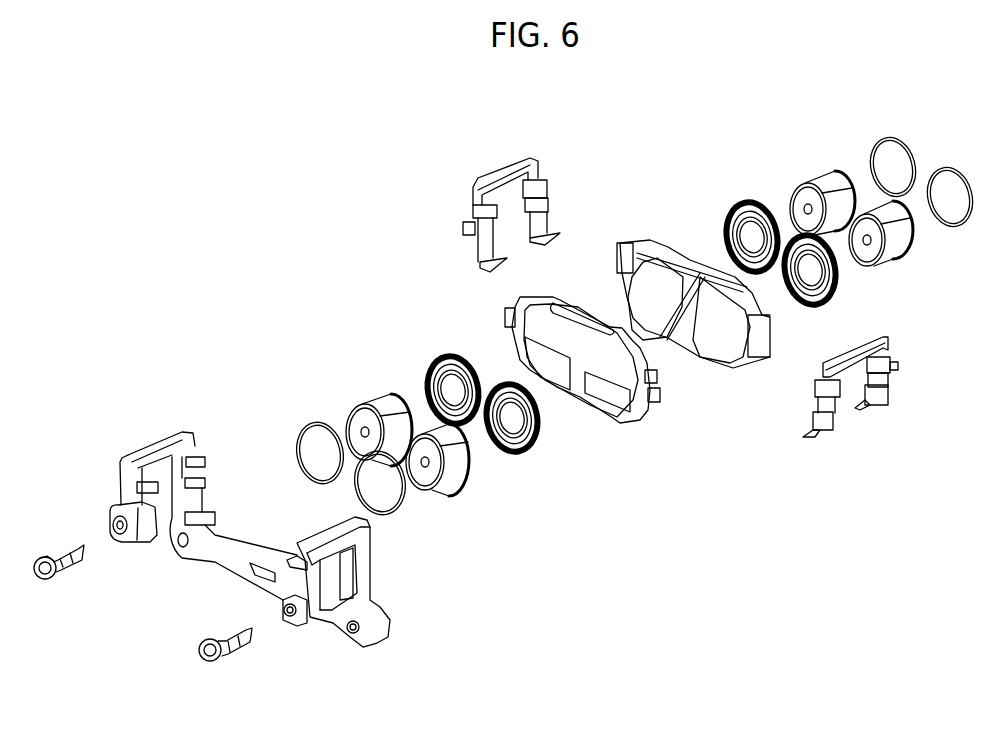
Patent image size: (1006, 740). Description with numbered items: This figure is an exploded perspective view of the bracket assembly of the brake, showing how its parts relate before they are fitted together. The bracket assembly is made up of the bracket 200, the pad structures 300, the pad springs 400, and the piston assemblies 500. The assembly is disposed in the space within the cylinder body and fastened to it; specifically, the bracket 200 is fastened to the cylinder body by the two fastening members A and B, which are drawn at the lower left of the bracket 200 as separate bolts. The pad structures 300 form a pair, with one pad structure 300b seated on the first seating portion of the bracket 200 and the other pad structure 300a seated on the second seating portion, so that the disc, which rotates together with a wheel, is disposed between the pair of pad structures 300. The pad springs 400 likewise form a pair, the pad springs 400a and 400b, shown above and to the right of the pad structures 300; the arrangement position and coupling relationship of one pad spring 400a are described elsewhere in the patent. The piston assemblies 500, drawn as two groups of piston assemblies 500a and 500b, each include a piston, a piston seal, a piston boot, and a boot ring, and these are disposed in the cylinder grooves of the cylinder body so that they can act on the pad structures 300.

The bracket 200 is at (393, 595).
The fastening member A is at (50, 553).
The fastening member B is at (232, 653).
The pad structures 300 is at (711, 377).
The pad structure 300a is at (650, 430).
The pad structure 300b is at (645, 236).
The pad springs 400 is at (633, 390).
The pad spring 400a is at (460, 211).
The pad spring 400b is at (829, 438).
The piston assemblies 500 is at (636, 390).
The piston assembly 500a is at (550, 455).
The piston assembly 500b is at (982, 233).